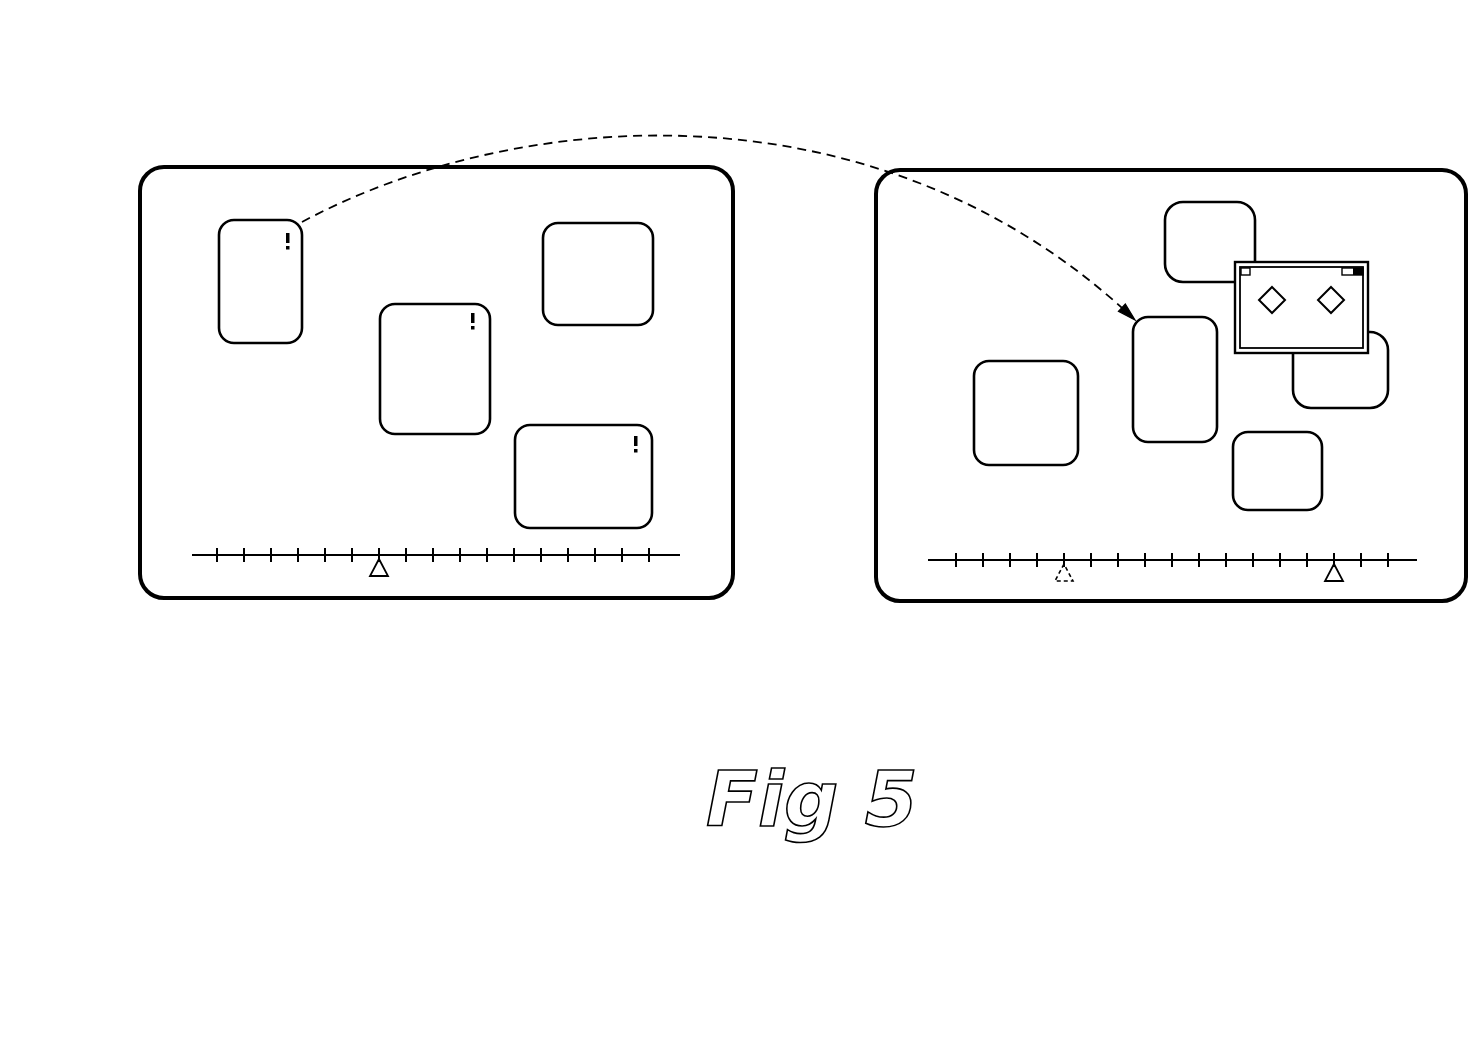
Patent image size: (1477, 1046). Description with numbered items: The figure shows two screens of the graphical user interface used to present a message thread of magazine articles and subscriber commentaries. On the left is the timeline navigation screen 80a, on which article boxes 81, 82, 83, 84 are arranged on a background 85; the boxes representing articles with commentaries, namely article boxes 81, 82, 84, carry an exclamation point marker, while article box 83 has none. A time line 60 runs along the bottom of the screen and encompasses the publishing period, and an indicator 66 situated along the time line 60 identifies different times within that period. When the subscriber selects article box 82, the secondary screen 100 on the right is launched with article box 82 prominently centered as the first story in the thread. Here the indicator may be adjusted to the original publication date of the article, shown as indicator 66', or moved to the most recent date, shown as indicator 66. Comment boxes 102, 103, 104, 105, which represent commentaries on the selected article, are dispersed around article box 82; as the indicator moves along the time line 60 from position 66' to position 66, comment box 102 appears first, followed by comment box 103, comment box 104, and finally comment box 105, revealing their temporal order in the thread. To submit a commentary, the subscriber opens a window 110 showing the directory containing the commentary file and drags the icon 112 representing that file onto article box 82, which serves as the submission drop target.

The timeline navigation screen 80a is at (373, 163).
The background 85 is at (301, 192).
The article box 82 is at (260, 333).
The article box 81 is at (437, 417).
The article box 83 is at (585, 311).
The article box 84 is at (636, 491).
The time line 60 is at (605, 574).
The indicator 66 is at (861, 614).
The indicator 66' is at (1095, 615).
The secondary screen 100 is at (1161, 166).
The comment box 102 is at (1010, 452).
The comment box 103 is at (1176, 245).
The comment box 104 is at (1374, 389).
The comment box 105 is at (1243, 474).
The window 110 is at (1350, 312).
The icon 112 is at (1272, 288).